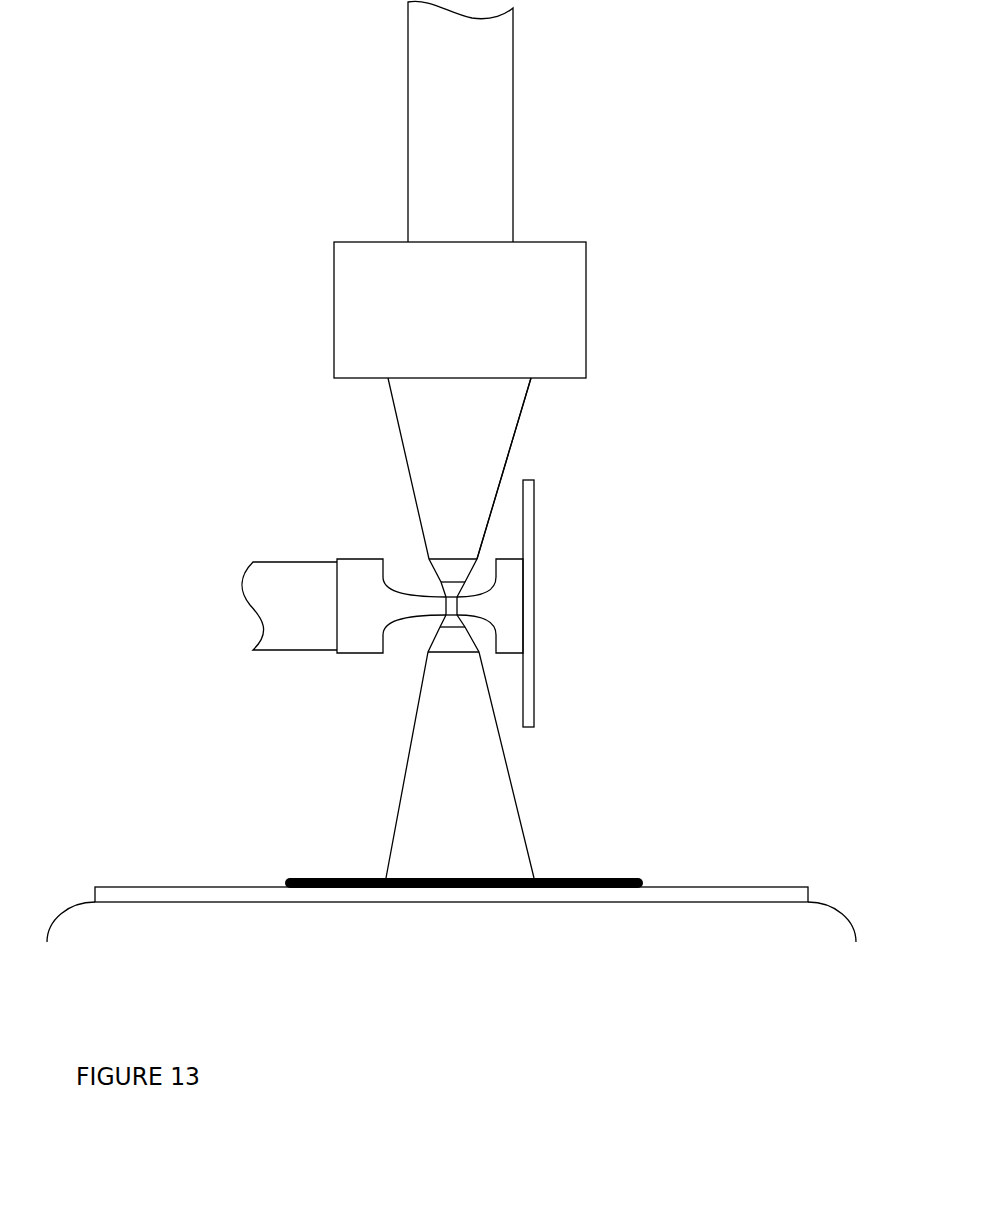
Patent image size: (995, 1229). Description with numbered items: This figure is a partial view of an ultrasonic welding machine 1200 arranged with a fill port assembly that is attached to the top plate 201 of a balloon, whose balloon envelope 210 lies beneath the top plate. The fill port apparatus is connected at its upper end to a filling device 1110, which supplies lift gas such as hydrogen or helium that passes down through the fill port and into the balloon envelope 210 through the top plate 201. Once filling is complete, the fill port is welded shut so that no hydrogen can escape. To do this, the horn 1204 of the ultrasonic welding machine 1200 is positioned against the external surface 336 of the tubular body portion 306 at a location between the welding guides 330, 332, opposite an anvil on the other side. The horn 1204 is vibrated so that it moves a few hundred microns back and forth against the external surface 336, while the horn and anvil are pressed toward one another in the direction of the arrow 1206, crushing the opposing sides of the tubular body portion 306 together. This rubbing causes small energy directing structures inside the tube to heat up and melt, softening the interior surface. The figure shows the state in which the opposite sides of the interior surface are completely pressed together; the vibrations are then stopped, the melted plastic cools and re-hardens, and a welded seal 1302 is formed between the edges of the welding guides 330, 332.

The filling device 1110 is at (587, 312).
The tubular body portion 306 is at (510, 452).
The welding guide 330 is at (428, 570).
The welding guide 332 is at (433, 637).
The welded seal 1302 is at (458, 605).
The external surface 336 is at (483, 770).
The ultrasonic welding machine 1200 is at (220, 621).
The horn 1204 is at (337, 628).
The arrow 1206 is at (535, 605).
The balloon envelope 210 is at (451, 911).
The top plate 201 is at (153, 903).